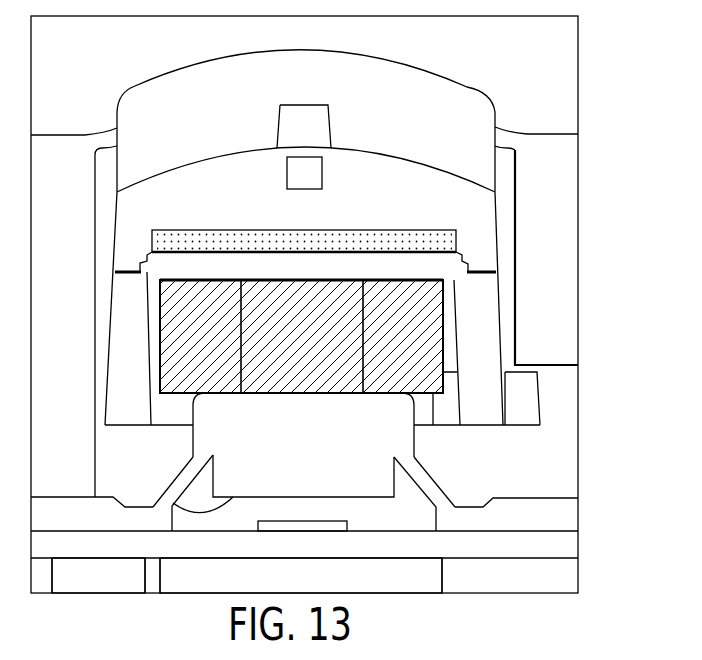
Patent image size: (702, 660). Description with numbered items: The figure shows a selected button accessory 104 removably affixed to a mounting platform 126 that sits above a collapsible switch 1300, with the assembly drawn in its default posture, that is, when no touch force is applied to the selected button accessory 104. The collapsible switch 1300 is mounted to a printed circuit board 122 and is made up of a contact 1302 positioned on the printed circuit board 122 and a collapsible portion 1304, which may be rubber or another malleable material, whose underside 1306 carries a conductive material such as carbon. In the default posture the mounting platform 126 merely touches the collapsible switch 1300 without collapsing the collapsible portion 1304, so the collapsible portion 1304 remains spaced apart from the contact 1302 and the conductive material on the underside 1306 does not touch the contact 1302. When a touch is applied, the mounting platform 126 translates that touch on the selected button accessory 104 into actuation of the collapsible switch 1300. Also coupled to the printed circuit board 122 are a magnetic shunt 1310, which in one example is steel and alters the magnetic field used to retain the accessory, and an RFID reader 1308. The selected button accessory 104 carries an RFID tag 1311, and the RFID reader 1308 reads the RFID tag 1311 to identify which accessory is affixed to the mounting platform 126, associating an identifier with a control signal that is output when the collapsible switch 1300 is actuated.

The selected button accessory 104 is at (462, 48).
The mounting platform 126 is at (545, 333).
The RFID tag 1311 is at (322, 178).
The collapsible switch 1300 is at (477, 455).
The collapsible portion 1304 is at (323, 473).
The underside 1306 is at (173, 503).
The contact 1302 is at (347, 524).
The printed circuit board 122 is at (578, 562).
The RFID reader 1308 is at (118, 586).
The magnetic shunt 1310 is at (323, 586).